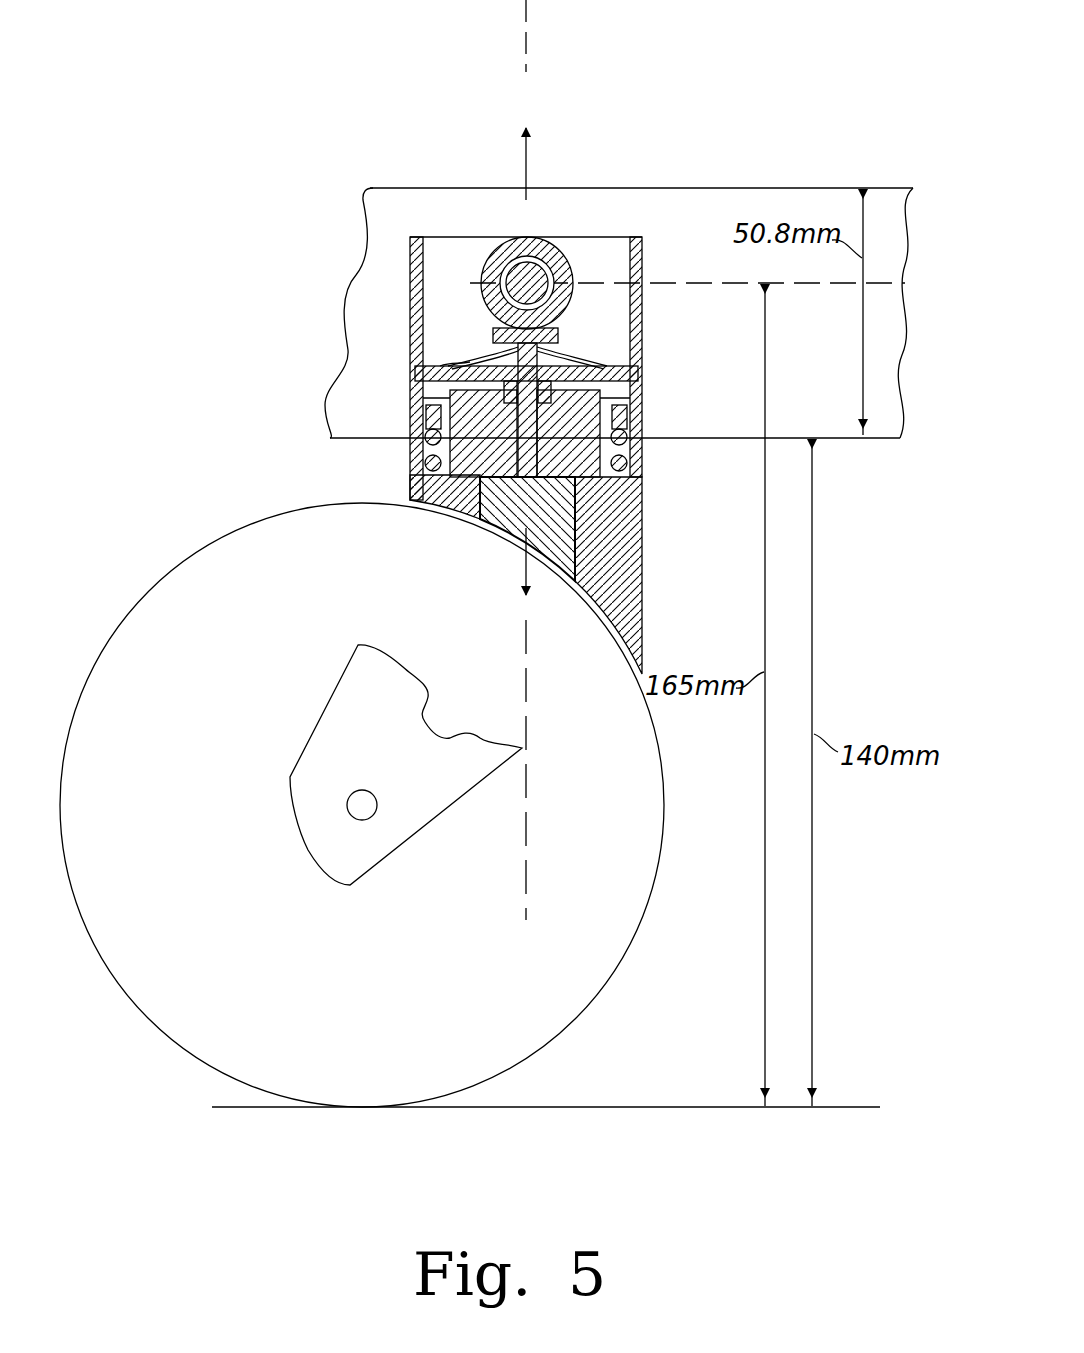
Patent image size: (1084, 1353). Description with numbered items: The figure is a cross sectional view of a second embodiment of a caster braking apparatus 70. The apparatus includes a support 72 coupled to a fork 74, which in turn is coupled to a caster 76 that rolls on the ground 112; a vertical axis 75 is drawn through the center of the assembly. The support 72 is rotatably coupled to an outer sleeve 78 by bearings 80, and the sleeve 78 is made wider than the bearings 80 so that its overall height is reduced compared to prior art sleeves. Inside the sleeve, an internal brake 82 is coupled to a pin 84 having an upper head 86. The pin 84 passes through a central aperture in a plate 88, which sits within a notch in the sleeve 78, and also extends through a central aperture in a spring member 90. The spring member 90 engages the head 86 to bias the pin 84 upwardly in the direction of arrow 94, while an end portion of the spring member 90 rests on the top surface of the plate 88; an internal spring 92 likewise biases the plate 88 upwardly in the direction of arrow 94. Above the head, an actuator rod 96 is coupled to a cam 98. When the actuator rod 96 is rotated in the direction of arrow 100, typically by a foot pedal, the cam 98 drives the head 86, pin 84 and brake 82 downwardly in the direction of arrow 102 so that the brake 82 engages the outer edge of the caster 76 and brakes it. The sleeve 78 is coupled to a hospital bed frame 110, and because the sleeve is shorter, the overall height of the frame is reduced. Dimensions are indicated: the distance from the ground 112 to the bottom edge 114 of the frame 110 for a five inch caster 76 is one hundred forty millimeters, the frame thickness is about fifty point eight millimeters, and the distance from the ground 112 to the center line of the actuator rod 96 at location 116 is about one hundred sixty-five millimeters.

The caster braking apparatus 70 is at (658, 412).
The support 72 is at (644, 562).
The fork 74 is at (295, 790).
The vertical axis 75 is at (533, 53).
The caster 76 is at (615, 960).
The outer sleeve 78 is at (644, 332).
The bearings 80 is at (607, 455).
The internal brake 82 is at (500, 518).
The pin 84 is at (505, 352).
The upper head 86 is at (558, 335).
The plate 88 is at (415, 375).
The spring member 90 is at (452, 365).
The internal spring 92 is at (517, 420).
The arrow 94 is at (532, 165).
The actuator rod 96 is at (572, 250).
The cam 98 is at (498, 250).
The arrow 100 is at (584, 316).
The arrow 102 is at (525, 570).
The hospital bed frame 110 is at (714, 212).
The ground 112 is at (656, 1106).
The bottom edge 114 is at (882, 440).
The location 116 is at (842, 285).